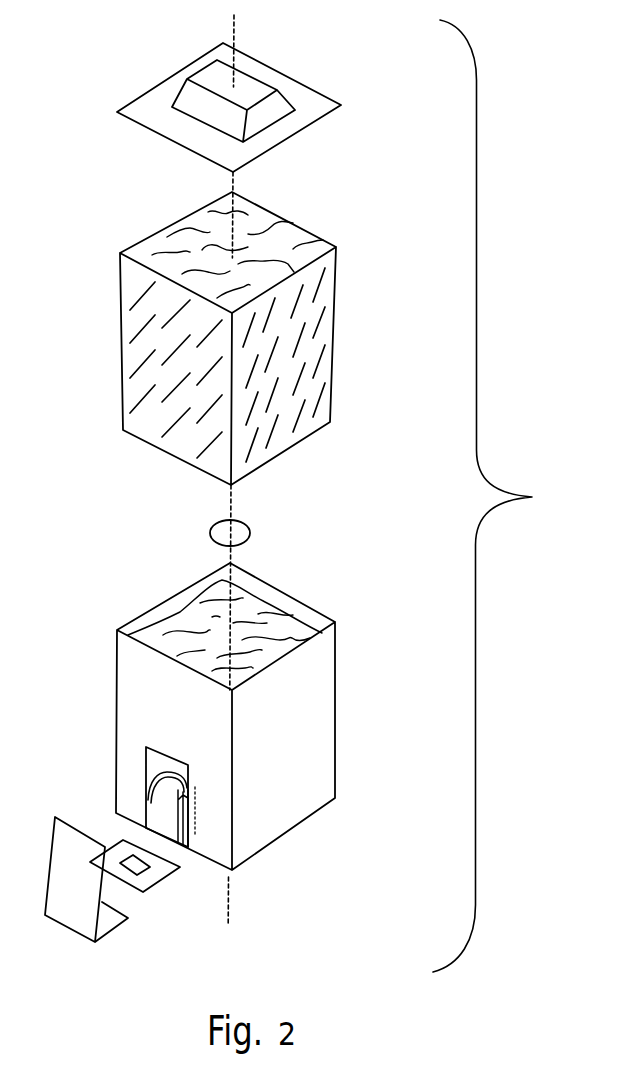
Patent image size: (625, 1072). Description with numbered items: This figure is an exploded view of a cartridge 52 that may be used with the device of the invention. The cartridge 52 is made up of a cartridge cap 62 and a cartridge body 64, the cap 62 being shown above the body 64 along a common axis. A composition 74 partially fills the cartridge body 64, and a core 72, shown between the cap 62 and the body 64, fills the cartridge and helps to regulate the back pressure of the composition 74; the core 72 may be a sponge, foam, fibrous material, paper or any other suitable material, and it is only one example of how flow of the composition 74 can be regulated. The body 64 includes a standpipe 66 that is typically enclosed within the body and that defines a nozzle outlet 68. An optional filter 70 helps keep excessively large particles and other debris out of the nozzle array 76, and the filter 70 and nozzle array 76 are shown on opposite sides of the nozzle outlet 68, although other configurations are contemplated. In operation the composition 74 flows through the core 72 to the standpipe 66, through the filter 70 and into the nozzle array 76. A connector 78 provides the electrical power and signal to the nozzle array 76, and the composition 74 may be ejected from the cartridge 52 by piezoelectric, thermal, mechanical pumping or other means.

The cartridge 52 is at (497, 496).
The cartridge cap 62 is at (308, 88).
The cartridge body 64 is at (337, 663).
The standpipe 66 is at (187, 782).
The nozzle outlet 68 is at (168, 828).
The filter 70 is at (252, 532).
The core 72 is at (333, 332).
The composition 74 is at (278, 628).
The nozzle array 76 is at (163, 878).
The connector 78 is at (108, 927).